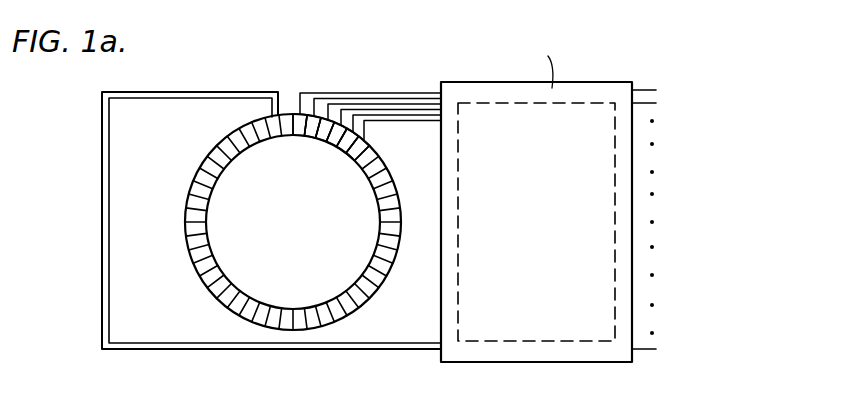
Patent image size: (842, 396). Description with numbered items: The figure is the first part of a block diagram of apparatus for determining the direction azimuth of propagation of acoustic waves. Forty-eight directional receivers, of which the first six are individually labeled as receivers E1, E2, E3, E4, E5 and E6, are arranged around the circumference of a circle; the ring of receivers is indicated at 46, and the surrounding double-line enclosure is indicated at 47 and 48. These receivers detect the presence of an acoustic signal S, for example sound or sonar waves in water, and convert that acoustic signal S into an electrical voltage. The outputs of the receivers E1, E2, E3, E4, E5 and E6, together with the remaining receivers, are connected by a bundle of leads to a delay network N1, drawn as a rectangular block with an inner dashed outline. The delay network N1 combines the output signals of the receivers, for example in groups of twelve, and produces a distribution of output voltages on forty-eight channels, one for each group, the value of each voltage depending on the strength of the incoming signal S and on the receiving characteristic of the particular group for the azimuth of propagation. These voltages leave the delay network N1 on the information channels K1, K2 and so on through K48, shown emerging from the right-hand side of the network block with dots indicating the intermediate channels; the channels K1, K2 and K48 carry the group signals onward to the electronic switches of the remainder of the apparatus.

The electrode ring 46 is at (256, 120).
The outer frame conductor 47 is at (273, 112).
The inner frame conductor 48 is at (291, 111).
The acoustic signal S is at (326, 91).
The directional receiver E1 is at (297, 132).
The directional receiver E2 is at (311, 136).
The directional receiver E3 is at (321, 140).
The directional receiver E4 is at (333, 144).
The directional receiver E5 is at (362, 138).
The directional receiver E6 is at (377, 150).
The delay network N1 is at (602, 82).
The information channel K1 is at (654, 92).
The information channel K2 is at (654, 106).
The information channel K48 is at (656, 352).